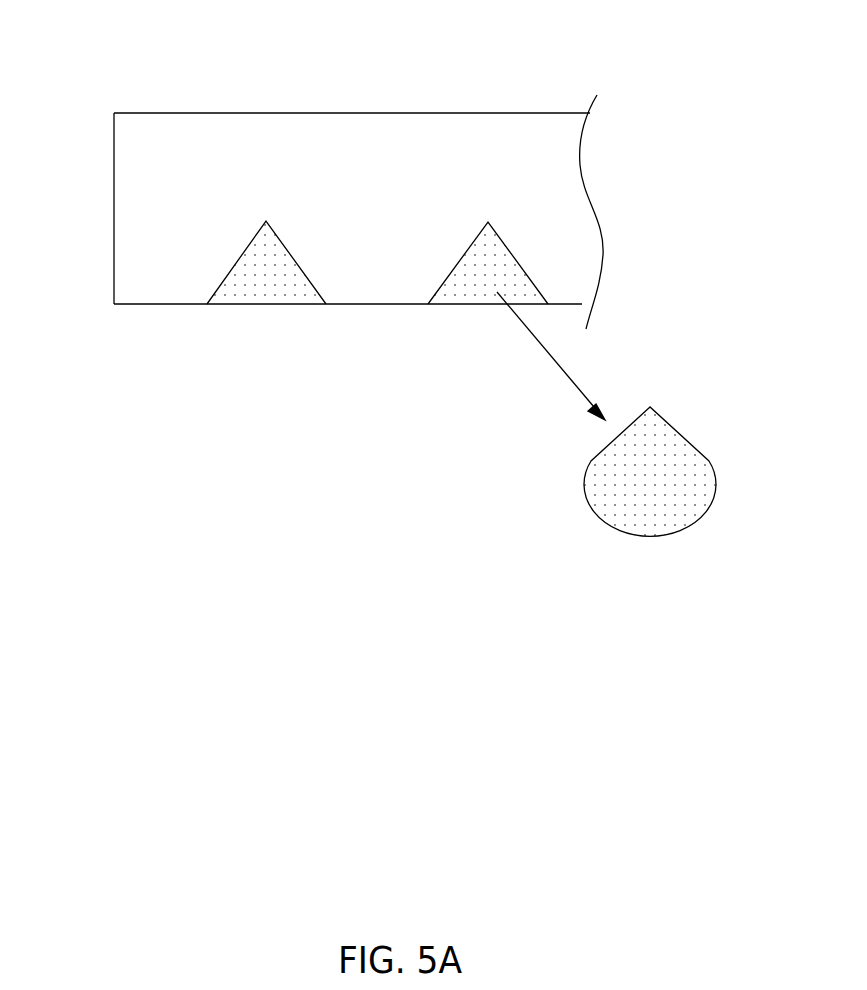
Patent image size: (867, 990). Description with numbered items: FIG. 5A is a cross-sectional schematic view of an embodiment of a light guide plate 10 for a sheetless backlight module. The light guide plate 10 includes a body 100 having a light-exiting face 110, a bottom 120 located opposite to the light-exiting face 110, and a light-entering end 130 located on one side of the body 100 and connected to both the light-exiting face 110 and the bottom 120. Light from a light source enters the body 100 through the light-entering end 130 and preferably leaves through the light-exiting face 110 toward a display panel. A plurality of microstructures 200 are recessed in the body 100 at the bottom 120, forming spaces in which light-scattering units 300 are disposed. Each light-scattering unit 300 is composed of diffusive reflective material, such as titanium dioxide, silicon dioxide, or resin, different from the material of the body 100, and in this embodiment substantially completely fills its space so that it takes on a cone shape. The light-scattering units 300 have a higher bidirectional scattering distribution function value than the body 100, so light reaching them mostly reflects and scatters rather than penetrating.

The light guide plate 10 is at (76, 38).
The body 100 is at (195, 138).
The light-exiting face 110 is at (352, 114).
The bottom 120 is at (372, 304).
The light-entering end 130 is at (114, 204).
The microstructure 200 is at (230, 272).
The light-scattering unit 300 is at (255, 292).